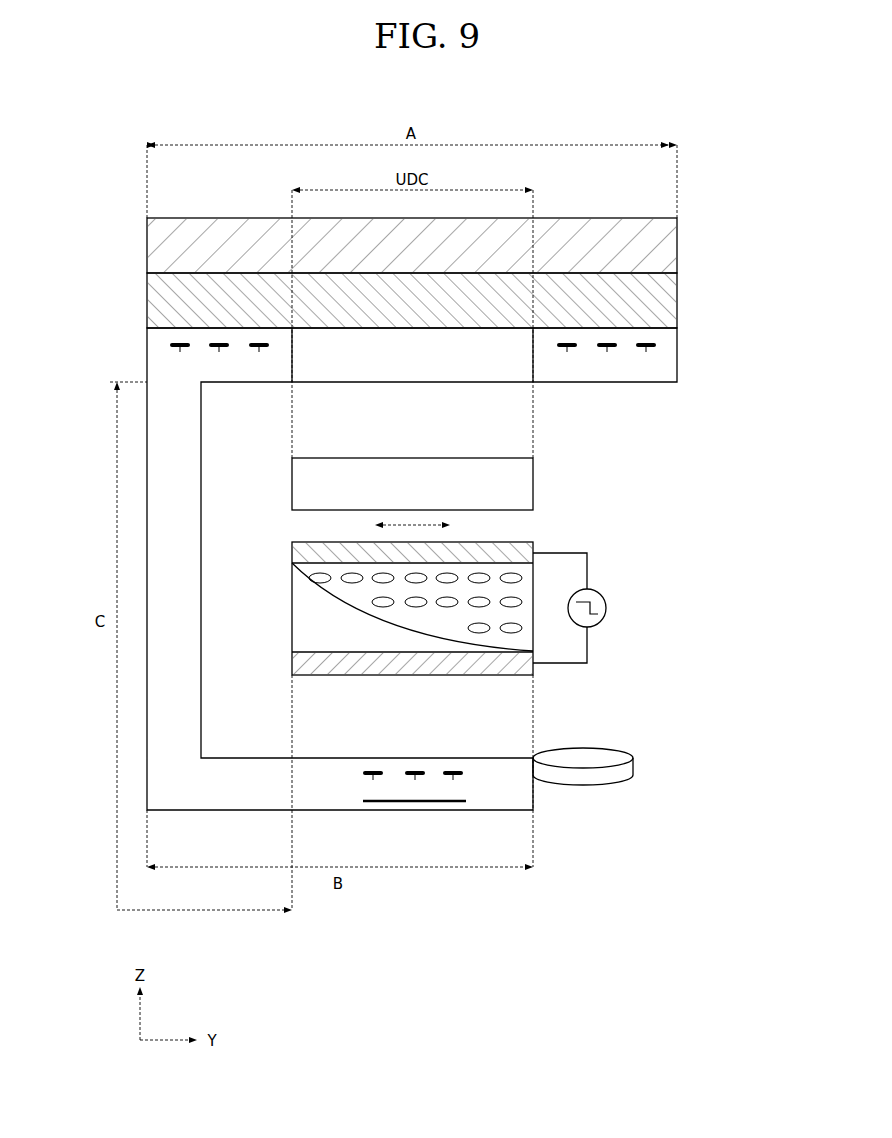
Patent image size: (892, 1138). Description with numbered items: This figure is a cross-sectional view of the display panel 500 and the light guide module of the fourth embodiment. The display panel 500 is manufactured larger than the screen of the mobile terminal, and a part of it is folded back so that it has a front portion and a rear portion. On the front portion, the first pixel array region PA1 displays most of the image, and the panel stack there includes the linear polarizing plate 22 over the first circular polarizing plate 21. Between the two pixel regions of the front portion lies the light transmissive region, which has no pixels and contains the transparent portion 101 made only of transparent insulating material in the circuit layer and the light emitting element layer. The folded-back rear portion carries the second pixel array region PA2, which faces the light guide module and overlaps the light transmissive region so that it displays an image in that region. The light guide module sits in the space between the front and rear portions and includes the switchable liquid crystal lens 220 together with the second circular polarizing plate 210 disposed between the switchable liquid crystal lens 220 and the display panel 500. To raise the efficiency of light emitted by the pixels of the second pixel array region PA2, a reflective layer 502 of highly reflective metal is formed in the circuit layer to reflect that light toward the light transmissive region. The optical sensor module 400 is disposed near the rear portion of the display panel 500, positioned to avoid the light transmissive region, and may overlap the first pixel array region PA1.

The linear polarizing plate 22 is at (678, 247).
The first circular polarizing plate 21 is at (432, 300).
The display panel 500 is at (459, 300).
The transparent portion 101 is at (507, 383).
The first pixel array region PA1 is at (246, 383).
The second circular polarizing plate 210 is at (534, 485).
The switchable liquid crystal lens 220 is at (606, 589).
The optical sensor module 400 is at (634, 767).
The reflective layer 502 is at (412, 812).
The second pixel array region PA2 is at (490, 800).